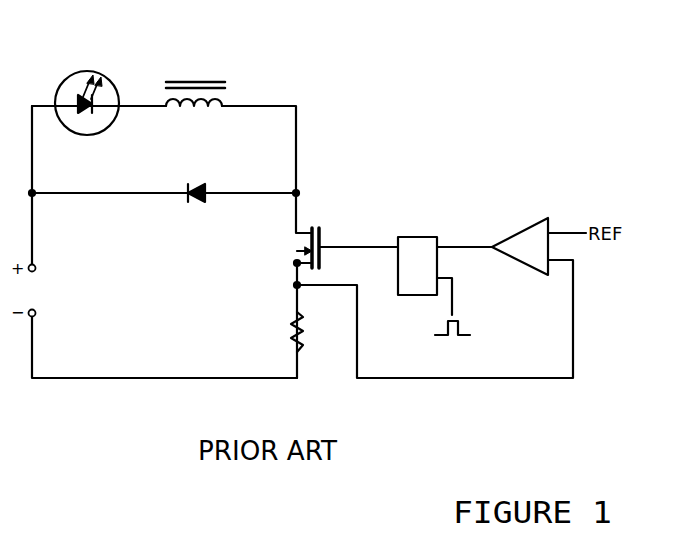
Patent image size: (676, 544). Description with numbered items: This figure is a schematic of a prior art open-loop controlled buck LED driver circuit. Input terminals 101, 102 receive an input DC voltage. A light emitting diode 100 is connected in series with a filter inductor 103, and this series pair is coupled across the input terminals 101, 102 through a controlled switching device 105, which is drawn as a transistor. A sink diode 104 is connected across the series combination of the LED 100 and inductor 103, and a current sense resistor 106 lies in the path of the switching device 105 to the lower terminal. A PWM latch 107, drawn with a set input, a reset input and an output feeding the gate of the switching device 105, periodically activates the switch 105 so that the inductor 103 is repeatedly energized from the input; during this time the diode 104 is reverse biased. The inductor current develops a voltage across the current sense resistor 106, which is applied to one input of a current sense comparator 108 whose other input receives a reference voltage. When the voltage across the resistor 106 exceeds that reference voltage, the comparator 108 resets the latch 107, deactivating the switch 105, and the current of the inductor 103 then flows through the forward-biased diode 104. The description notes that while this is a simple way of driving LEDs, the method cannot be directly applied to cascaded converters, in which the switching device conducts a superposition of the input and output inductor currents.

The light emitting diode 100 is at (113, 73).
The input terminal 101 is at (45, 268).
The input terminal 102 is at (45, 313).
The filter inductor 103 is at (228, 83).
The sink diode 104 is at (200, 212).
The controlled switching device 105 is at (322, 223).
The current sense resistor 106 is at (278, 333).
The PWM latch 107 is at (432, 230).
The current sense comparator 108 is at (553, 212).